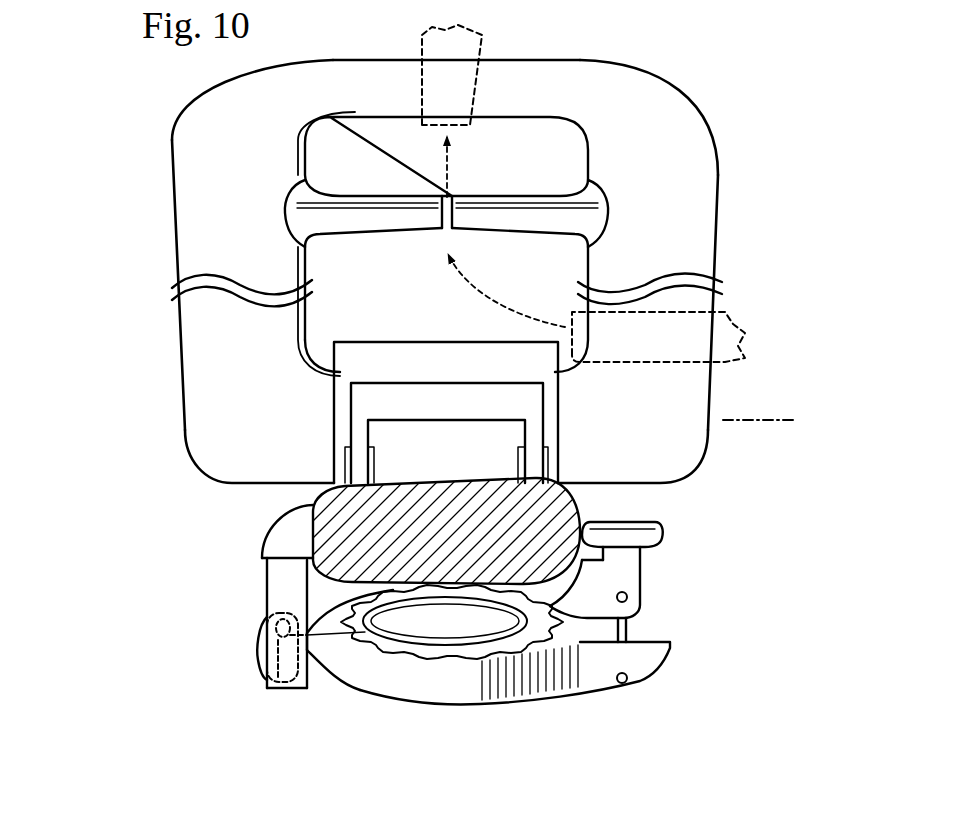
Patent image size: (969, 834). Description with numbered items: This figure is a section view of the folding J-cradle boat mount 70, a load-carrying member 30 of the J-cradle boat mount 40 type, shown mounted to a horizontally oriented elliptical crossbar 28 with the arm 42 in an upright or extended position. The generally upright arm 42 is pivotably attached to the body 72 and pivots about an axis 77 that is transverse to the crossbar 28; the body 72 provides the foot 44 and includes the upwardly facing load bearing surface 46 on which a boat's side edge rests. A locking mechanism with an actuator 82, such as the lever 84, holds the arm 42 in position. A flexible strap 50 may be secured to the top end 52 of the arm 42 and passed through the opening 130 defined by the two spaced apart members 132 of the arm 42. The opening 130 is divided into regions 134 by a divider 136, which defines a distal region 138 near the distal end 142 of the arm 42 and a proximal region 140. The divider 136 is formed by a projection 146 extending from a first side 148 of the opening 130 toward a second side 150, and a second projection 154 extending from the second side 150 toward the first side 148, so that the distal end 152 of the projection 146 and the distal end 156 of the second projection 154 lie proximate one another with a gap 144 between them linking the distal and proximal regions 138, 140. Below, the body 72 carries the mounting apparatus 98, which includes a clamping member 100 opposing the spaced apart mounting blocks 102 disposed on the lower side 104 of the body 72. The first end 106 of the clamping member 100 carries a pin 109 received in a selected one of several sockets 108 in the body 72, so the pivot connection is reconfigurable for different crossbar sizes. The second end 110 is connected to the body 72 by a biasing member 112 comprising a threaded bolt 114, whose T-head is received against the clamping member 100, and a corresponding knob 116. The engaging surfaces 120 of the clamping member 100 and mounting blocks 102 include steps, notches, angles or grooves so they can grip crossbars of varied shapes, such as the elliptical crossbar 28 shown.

The crossbar 28 is at (360, 632).
The load-carrying member 30 is at (85, 168).
The J-cradle boat mount 40 is at (120, 176).
The arm 42 is at (700, 164).
The foot 44 is at (251, 578).
The load bearing surface 46 is at (438, 478).
The flexible strap 50 is at (483, 53).
The top end 52 is at (727, 78).
The folding J-cradle boat mount 70 is at (154, 184).
The body 72 is at (288, 534).
The axis 77 is at (757, 428).
The actuator 82 is at (393, 396).
The lever 84 is at (469, 396).
The mounting apparatus 98 is at (717, 630).
The clamping member 100 is at (444, 707).
The mounting blocks 102 is at (549, 606).
The lower side 104 is at (237, 689).
The first end 106 is at (259, 678).
The sockets 108 is at (256, 660).
The pin 109 is at (264, 622).
The second end 110 is at (646, 690).
The biasing member 112 is at (651, 598).
The threaded bolt 114 is at (630, 633).
The knob 116 is at (660, 531).
The engaging surfaces 120 is at (440, 660).
The opening 130 is at (346, 290).
The spaced apart members 132 is at (198, 258).
The regions 134 is at (546, 147).
The divider 136 is at (387, 168).
The distal region 138 is at (392, 135).
The proximal region 140 is at (352, 326).
The distal end 142 is at (395, 50).
The gap 144 is at (446, 233).
The projection 146 is at (312, 218).
The first side 148 is at (307, 258).
The second side 150 is at (584, 262).
The distal end 152 is at (436, 214).
The second projection 154 is at (585, 196).
The distal end 156 is at (460, 212).